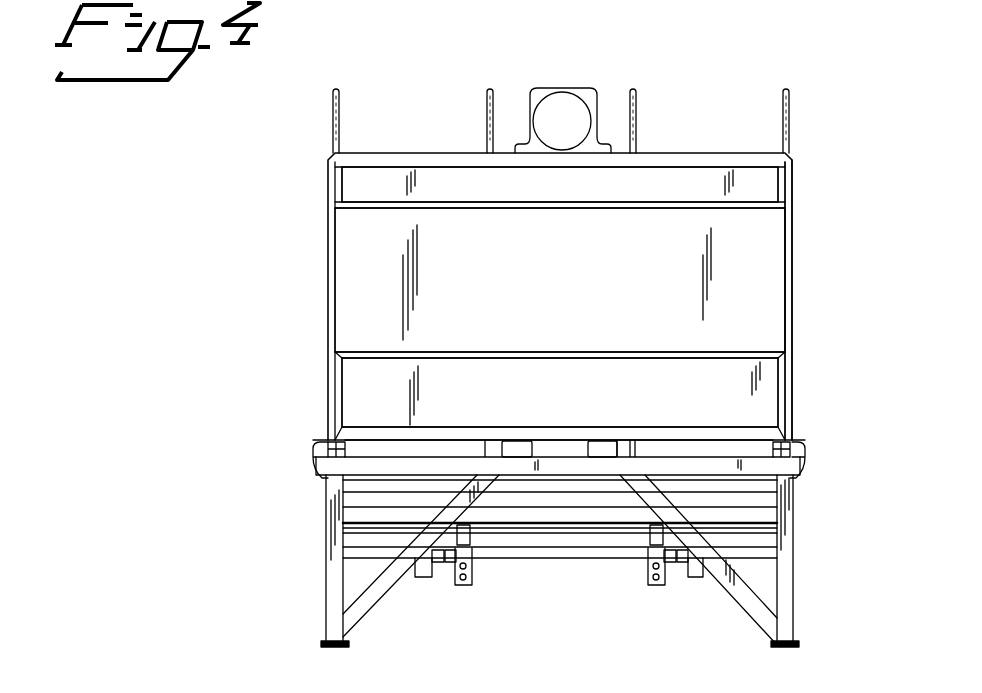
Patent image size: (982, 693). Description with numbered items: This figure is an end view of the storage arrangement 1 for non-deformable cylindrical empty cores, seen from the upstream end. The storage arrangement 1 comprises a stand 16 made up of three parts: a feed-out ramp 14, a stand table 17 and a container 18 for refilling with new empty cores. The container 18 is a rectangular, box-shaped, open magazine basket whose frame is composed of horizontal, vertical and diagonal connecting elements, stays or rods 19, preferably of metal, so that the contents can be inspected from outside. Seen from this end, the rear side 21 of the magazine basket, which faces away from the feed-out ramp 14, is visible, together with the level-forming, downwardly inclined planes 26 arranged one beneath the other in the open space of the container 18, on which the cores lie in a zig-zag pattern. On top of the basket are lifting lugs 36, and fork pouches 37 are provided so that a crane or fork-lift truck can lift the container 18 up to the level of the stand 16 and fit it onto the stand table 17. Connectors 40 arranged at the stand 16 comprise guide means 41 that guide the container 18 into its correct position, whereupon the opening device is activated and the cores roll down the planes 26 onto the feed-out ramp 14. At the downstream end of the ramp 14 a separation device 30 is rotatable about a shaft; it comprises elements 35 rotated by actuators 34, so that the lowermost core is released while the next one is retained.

The storage arrangement 1 is at (255, 220).
The feed-out ramp 14 is at (767, 501).
The stand 16 is at (318, 496).
The stand table 17 is at (786, 467).
The container 18 is at (768, 240).
The connecting elements, stays or rods 19 is at (740, 590).
The rear side 21 is at (347, 250).
The inclined planes or ramps 26 is at (358, 190).
The separation device 30 is at (583, 560).
The actuators 34 is at (465, 588).
The elements 35 is at (427, 580).
The lifting lugs 36 is at (585, 100).
The fork pouches 37 is at (517, 447).
The connectors 40 is at (328, 442).
The guide means 41 is at (664, 450).